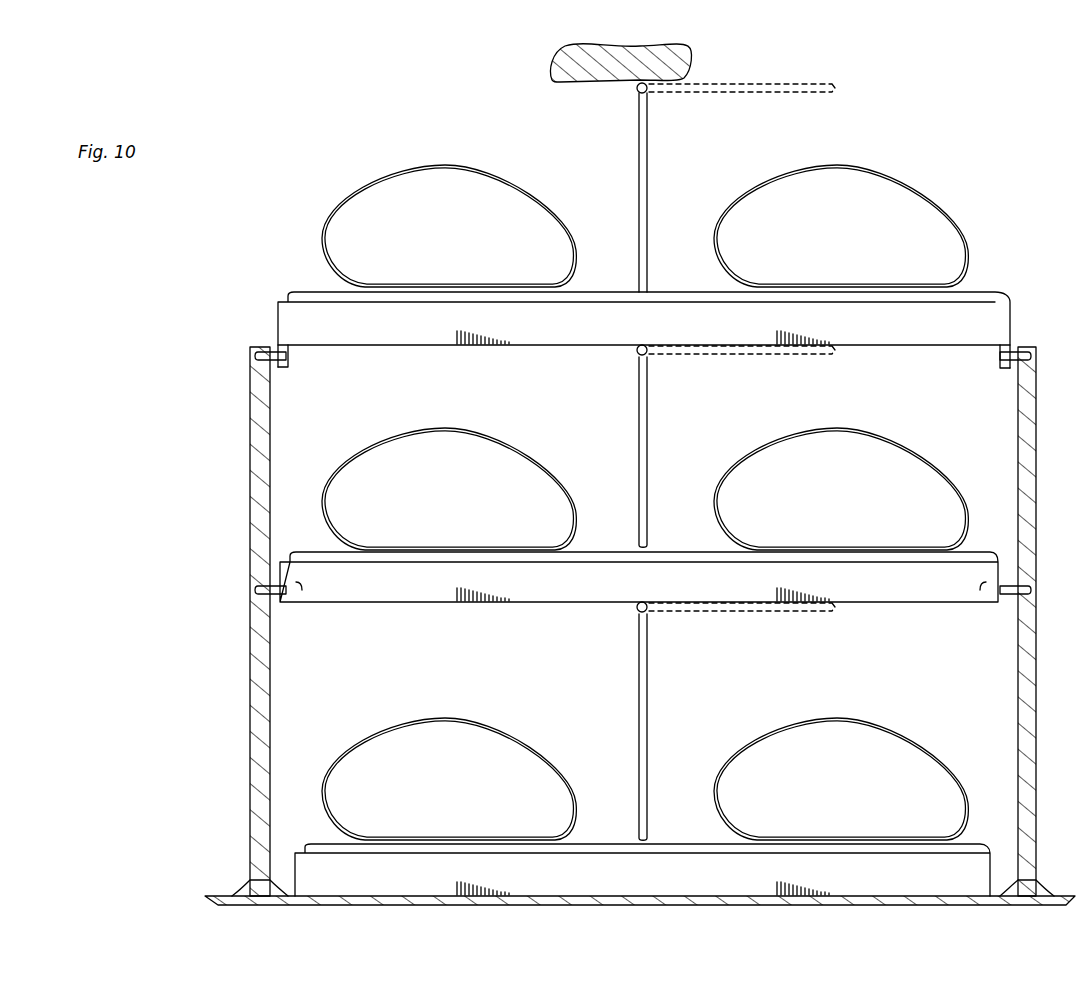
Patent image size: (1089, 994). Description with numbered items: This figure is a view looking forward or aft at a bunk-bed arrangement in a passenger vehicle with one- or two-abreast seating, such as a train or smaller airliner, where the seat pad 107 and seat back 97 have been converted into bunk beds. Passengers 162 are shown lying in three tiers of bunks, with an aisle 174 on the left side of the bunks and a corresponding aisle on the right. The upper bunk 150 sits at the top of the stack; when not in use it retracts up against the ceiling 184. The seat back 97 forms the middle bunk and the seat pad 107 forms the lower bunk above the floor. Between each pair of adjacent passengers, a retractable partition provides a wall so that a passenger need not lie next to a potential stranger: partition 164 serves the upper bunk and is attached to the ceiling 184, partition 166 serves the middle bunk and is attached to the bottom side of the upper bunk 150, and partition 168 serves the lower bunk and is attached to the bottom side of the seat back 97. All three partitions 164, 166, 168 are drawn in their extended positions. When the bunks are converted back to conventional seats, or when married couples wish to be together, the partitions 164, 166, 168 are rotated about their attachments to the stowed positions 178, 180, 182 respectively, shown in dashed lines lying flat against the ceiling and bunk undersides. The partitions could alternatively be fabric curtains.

The seat back 97 is at (888, 592).
The seat pad 107 is at (838, 890).
The upper bunk 150 is at (1003, 324).
The passengers 162 is at (530, 192).
The partition 164 is at (650, 224).
The partition 166 is at (650, 466).
The partition 168 is at (650, 702).
The aisle 174 is at (230, 590).
The rotated position of partition 178 is at (692, 92).
The rotated position of partition 180 is at (696, 354).
The rotated position of partition 182 is at (698, 612).
The ceiling 184 is at (574, 84).